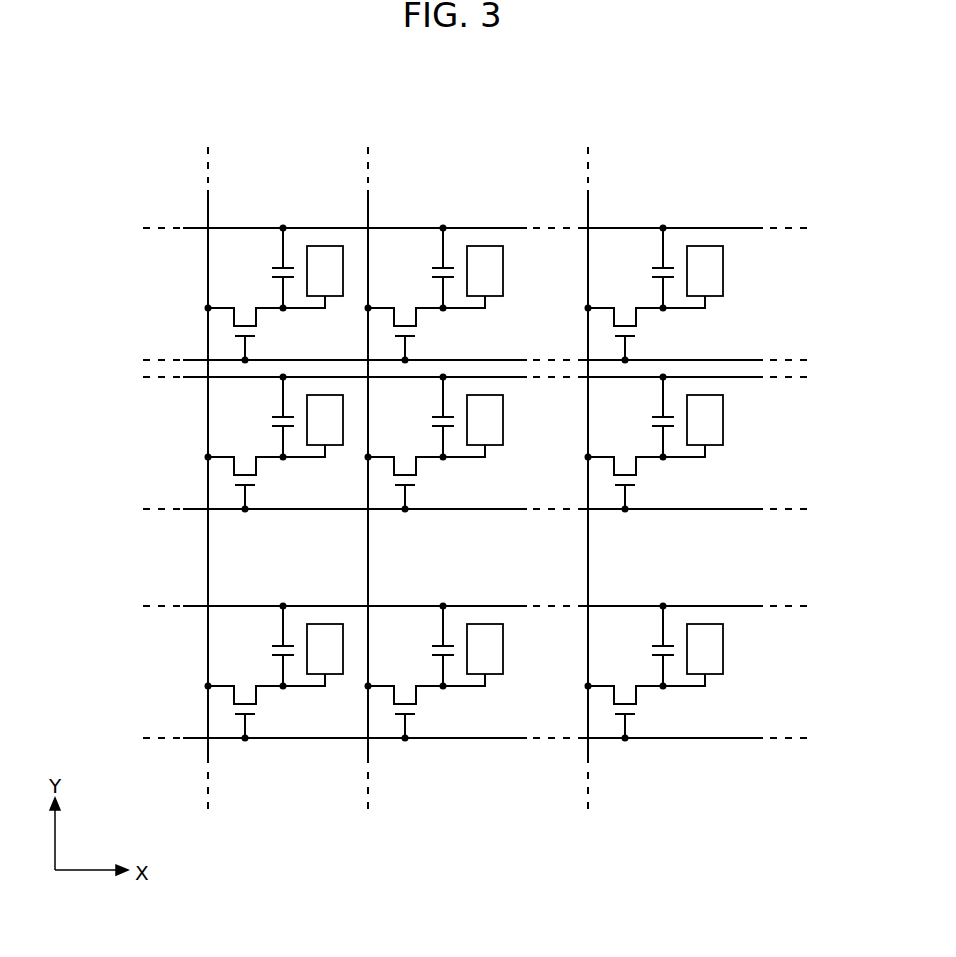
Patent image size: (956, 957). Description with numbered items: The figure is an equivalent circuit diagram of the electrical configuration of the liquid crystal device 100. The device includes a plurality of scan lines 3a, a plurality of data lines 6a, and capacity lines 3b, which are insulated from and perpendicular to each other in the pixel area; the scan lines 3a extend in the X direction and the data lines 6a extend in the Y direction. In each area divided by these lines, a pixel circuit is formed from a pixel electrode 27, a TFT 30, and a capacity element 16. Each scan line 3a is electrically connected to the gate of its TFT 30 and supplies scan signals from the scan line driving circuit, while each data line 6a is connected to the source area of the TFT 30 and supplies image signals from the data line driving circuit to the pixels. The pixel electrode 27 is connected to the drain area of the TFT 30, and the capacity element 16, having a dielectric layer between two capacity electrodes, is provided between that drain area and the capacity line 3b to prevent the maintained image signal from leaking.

The liquid crystal device 100 is at (699, 146).
The data lines 6a is at (209, 205).
The capacity elements 16 is at (272, 272).
The pixel electrodes 27 is at (705, 266).
The TFTs 30 is at (259, 332).
The scan lines 3a is at (750, 360).
The capacity lines 3b is at (750, 228).